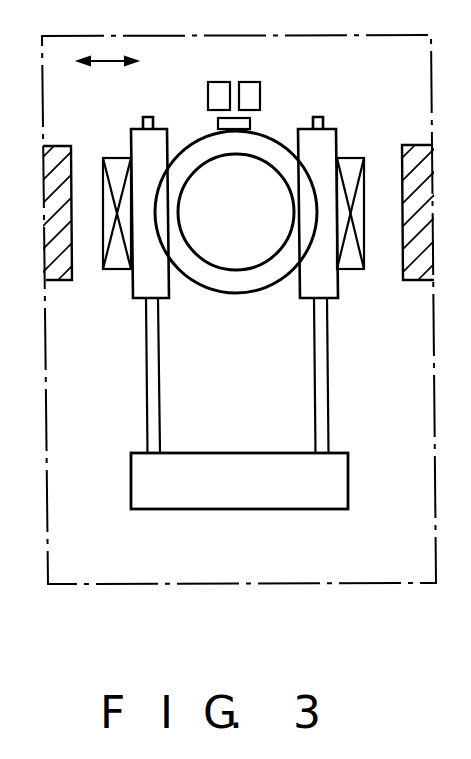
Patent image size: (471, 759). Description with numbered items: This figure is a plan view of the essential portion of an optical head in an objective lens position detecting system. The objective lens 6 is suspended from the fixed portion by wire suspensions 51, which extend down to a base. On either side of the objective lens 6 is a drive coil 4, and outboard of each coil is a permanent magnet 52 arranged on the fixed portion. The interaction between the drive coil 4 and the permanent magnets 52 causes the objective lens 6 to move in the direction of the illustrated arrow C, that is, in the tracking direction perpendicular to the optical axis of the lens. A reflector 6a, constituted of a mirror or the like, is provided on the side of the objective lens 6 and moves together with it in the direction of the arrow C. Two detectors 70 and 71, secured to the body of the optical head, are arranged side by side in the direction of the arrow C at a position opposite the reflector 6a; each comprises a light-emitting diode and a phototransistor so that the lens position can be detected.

The drive coil 4 is at (113, 158).
The objective lens 6 is at (237, 263).
The reflector 6a is at (252, 130).
The wire suspensions 51 is at (147, 387).
The permanent magnets 52 is at (66, 281).
The detector 70 is at (222, 82).
The detector 71 is at (258, 82).
The arrow C is at (107, 62).